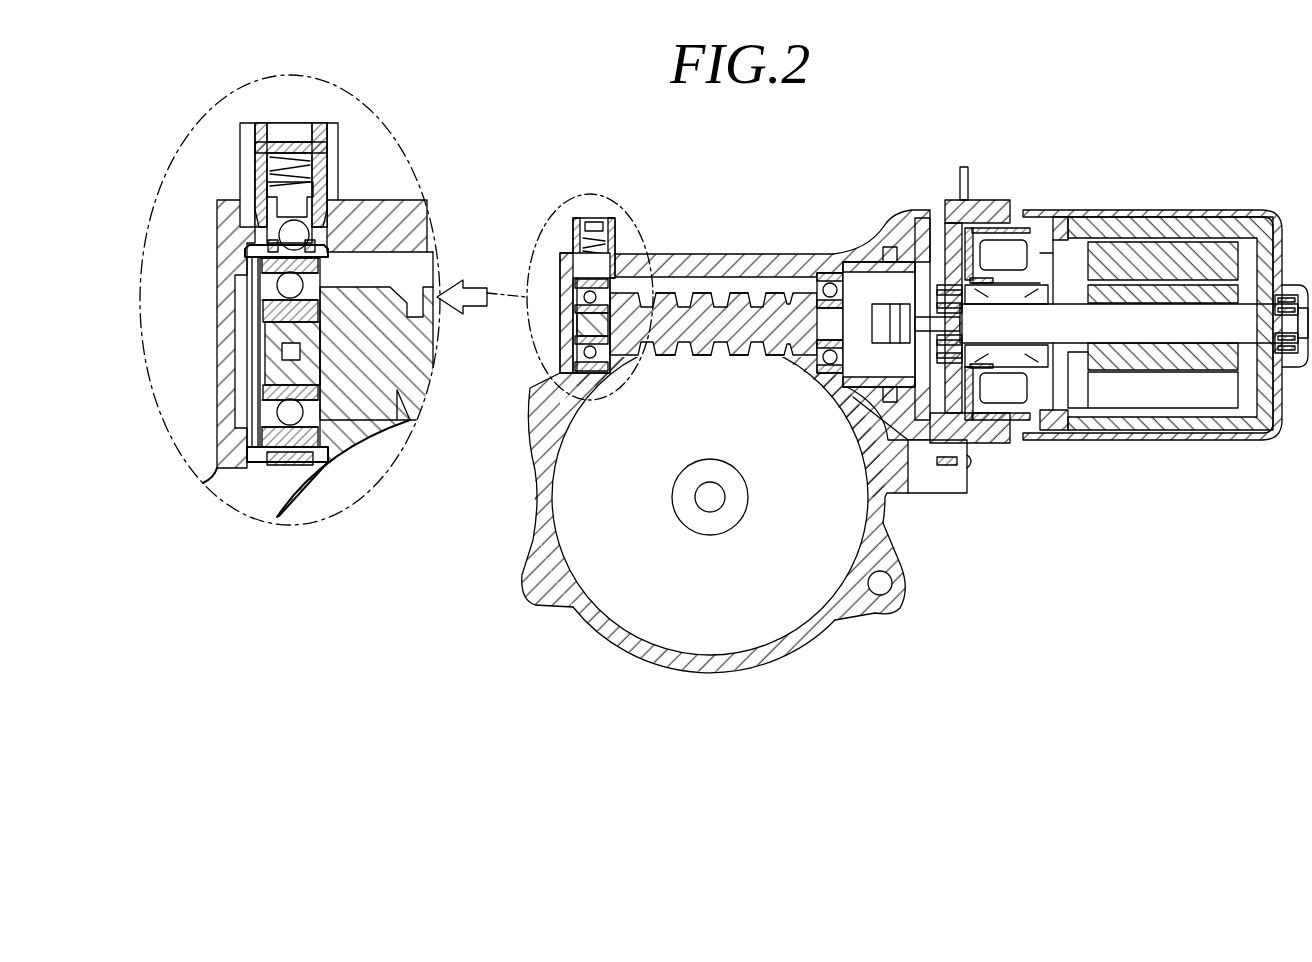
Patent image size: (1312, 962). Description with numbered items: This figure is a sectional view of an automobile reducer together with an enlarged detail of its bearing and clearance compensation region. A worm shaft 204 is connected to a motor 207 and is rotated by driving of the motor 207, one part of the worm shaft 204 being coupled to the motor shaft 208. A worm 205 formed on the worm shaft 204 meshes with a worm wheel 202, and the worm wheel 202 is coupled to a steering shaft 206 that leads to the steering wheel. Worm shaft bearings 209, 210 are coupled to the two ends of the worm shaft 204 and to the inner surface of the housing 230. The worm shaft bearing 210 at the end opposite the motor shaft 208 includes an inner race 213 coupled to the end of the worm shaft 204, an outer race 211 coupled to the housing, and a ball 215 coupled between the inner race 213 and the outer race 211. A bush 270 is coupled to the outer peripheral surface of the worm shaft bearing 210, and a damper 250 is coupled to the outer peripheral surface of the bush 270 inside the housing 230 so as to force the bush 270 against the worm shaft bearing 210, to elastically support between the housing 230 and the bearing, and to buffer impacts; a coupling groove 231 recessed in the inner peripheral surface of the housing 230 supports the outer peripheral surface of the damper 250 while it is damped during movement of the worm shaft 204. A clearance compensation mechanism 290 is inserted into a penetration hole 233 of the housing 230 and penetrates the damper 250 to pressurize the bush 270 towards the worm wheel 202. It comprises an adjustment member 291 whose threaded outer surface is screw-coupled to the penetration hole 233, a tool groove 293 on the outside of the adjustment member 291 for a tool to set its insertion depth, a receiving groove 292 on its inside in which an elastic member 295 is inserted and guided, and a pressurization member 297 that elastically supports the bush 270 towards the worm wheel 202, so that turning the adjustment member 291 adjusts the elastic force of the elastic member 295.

The worm wheel 202 is at (833, 507).
The worm shaft 204 is at (653, 345).
The worm 205 is at (738, 318).
The steering shaft 206 is at (707, 500).
The motor 207 is at (1230, 212).
The motor shaft 208 is at (948, 318).
The worm shaft bearing 209 is at (828, 275).
The worm shaft bearing 210 is at (578, 268).
The outer race 211 is at (293, 445).
The inner race 213 is at (247, 447).
The ball 215 is at (290, 425).
The housing 230 is at (777, 255).
The coupling groove 231 is at (378, 213).
The penetration hole 233 is at (240, 121).
The damper 250 is at (308, 467).
The bush 270 is at (330, 252).
The clearance compensation mechanism 290 is at (260, 95).
The adjustment member 291 is at (263, 142).
The receiving groove 292 is at (255, 207).
The tool groove 293 is at (282, 128).
The elastic member 295 is at (310, 156).
The pressurization member 297 is at (302, 200).